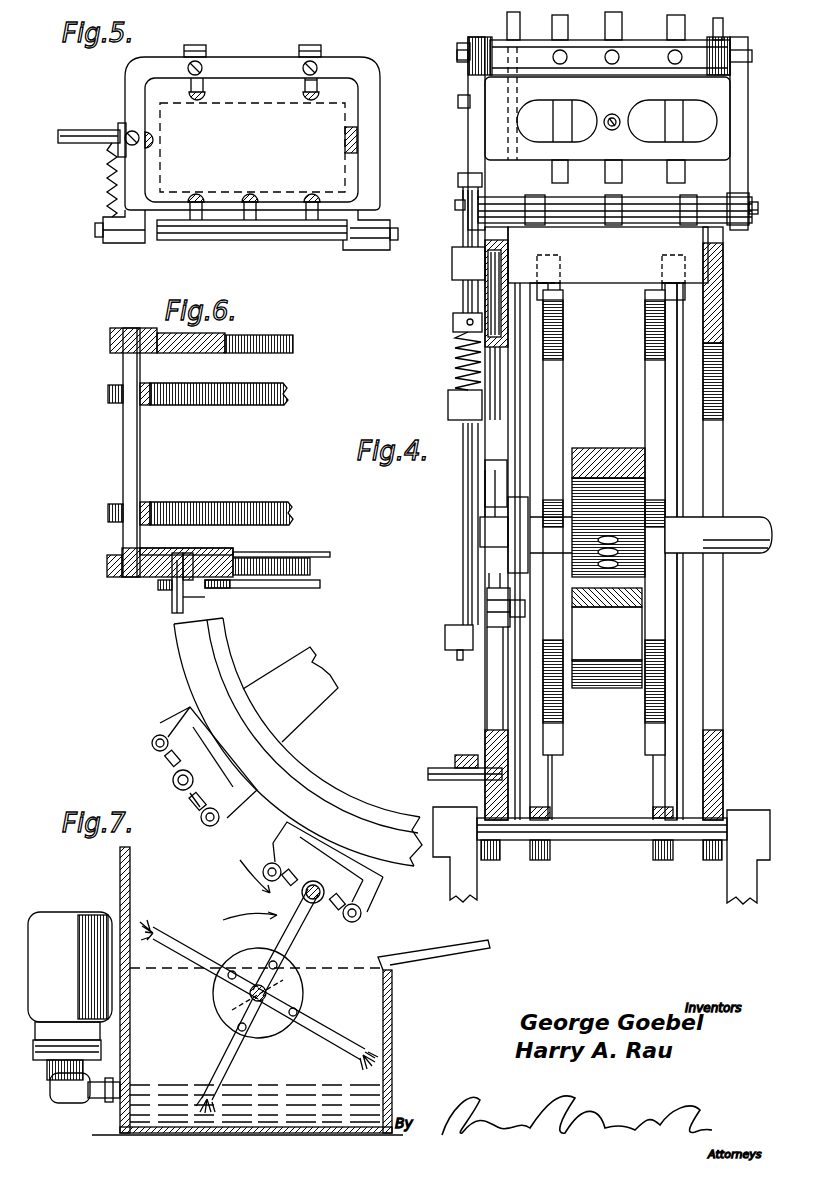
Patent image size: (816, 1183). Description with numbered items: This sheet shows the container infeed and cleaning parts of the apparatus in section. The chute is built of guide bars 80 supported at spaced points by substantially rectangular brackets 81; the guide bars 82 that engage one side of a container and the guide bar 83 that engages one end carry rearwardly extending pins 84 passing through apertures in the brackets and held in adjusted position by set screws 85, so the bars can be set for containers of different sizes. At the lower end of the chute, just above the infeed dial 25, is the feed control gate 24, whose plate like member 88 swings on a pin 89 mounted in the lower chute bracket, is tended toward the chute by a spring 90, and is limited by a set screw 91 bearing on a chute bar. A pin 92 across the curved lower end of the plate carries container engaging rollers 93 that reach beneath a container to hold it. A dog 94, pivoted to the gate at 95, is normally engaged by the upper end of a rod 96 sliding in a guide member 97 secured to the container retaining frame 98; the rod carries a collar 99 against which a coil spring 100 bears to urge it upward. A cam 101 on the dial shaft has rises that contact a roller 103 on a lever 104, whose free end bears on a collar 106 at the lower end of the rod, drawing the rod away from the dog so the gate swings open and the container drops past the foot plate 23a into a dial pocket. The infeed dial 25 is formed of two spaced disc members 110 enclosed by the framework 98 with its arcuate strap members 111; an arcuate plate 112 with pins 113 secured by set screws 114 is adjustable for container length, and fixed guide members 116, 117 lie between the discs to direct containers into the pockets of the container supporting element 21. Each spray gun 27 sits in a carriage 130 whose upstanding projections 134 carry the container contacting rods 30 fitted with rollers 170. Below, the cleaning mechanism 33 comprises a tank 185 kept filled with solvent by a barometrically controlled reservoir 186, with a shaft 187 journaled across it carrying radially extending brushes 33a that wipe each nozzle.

In FIG. 5, the brackets 81 is at (372, 105).
In FIG. 4, the brackets 81 is at (720, 47).
In FIG. 5, the guide bars 82 is at (200, 100).
In FIG. 5, the guide bar 83 is at (162, 140).
In FIG. 5, the pins 84 is at (318, 82).
In FIG. 5, the set screws 85 is at (197, 58).
In FIG. 5, the pin 89 is at (207, 232).
In FIG. 4, the pin 89 is at (458, 52).
In FIG. 5, the spring 90 is at (106, 190).
In FIG. 6, the container retaining frame 98 is at (283, 340).
In FIG. 6, the arcuate strap members 111 is at (220, 396).
In FIG. 4, the arcuate strap members 111 is at (545, 384).
In FIG. 6, the arcuate plate 112 is at (200, 556).
In FIG. 4, the arcuate plate 112 is at (510, 710).
In FIG. 6, the pins 113 is at (210, 603).
In FIG. 4, the pins 113 is at (453, 755).
In FIG. 6, the lever 104 is at (296, 590).
In FIG. 4, the lever 104 is at (487, 606).
In FIG. 6, the set screws 114 is at (160, 585).
In FIG. 4, the set screws 114 is at (457, 785).
In FIG. 4, the guide bars 80 is at (656, 25).
In FIG. 4, the plate like member 88 is at (497, 132).
In FIG. 4, the feed control gate 24 is at (720, 152).
In FIG. 4, the set screw 91 is at (620, 107).
In FIG. 4, the container engaging rollers 93 is at (677, 197).
In FIG. 4, the pin 92 is at (766, 194).
In FIG. 4, the dog 94 is at (463, 189).
In FIG. 4, the pivot 95 is at (461, 180).
In FIG. 4, the rod 96 is at (467, 229).
In FIG. 4, the collar 99 is at (452, 318).
In FIG. 4, the coil spring 100 is at (454, 357).
In FIG. 4, the guide member 97 is at (449, 396).
In FIG. 4, the foot plate 23a is at (632, 263).
In FIG. 4, the infeed dial 25 is at (657, 410).
In FIG. 4, the guide member 117 is at (600, 453).
In FIG. 4, the guide member 116 is at (615, 668).
In FIG. 4, the disc members 110 is at (653, 735).
In FIG. 4, the cam 101 is at (497, 557).
In FIG. 4, the collar 106 is at (453, 637).
In FIG. 4, the roller 103 is at (495, 633).
In FIG. 7, the container supporting element 21 is at (323, 770).
In FIG. 7, the spray gun 27 is at (270, 863).
In FIG. 7, the carriage 130 is at (335, 853).
In FIG. 7, the upstanding projections 134 is at (373, 883).
In FIG. 7, the container contacting rods 30 is at (372, 913).
In FIG. 7, the rollers 170 is at (333, 917).
In FIG. 7, the cleaning mechanism 33 is at (268, 1037).
In FIG. 7, the shaft 187 is at (232, 1008).
In FIG. 7, the brushes 33a is at (367, 1040).
In FIG. 7, the tank 185 is at (392, 1017).
In FIG. 7, the reservoir 186 is at (85, 899).